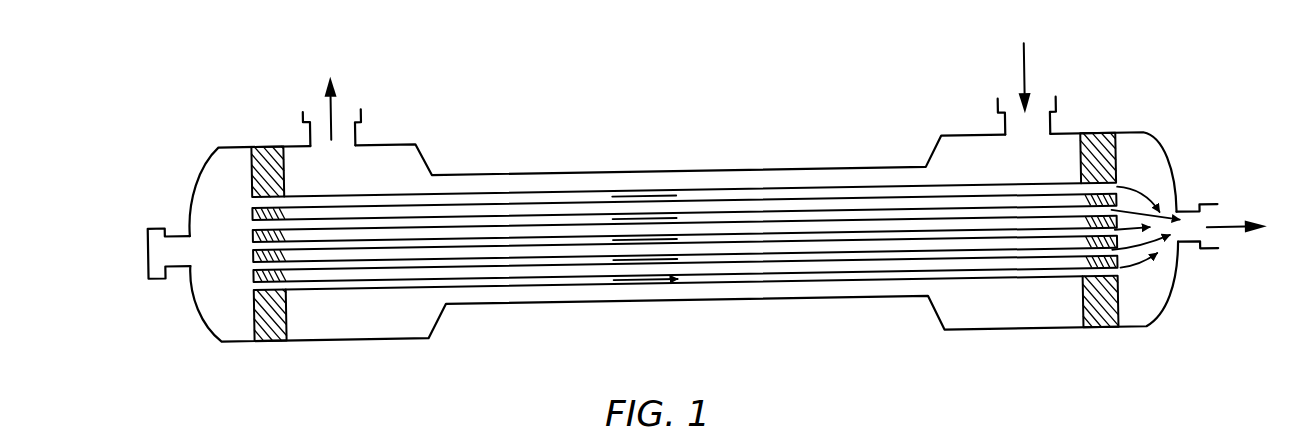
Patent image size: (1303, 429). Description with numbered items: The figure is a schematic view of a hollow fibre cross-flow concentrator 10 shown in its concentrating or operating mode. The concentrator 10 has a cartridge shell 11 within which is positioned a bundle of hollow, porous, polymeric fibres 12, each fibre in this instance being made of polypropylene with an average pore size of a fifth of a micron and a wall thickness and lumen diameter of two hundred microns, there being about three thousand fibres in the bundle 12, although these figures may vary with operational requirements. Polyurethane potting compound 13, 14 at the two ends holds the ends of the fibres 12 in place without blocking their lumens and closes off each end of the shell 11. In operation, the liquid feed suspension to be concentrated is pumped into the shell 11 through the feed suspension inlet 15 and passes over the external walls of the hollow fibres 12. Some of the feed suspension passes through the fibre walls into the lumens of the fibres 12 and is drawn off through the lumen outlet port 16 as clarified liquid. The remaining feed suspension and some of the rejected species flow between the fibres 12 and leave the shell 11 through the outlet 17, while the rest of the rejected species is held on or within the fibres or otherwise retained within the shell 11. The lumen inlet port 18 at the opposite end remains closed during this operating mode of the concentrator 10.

The hollow fibre cross-flow concentrator 10 is at (707, 221).
The cartridge shell 11 is at (751, 174).
The hollow, porous, polymeric fibres 12 is at (552, 262).
The polyurethane potting compound 13 is at (265, 147).
The polyurethane potting compound 14 is at (1124, 148).
The feed suspension inlet 15 is at (1064, 123).
The lumen outlet port 16 is at (1187, 266).
The outlet 17 is at (362, 135).
The lumen inlet port 18 is at (180, 226).